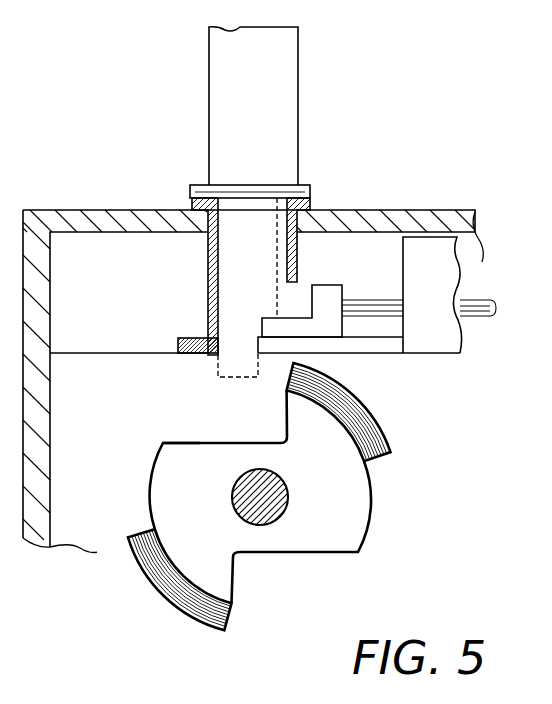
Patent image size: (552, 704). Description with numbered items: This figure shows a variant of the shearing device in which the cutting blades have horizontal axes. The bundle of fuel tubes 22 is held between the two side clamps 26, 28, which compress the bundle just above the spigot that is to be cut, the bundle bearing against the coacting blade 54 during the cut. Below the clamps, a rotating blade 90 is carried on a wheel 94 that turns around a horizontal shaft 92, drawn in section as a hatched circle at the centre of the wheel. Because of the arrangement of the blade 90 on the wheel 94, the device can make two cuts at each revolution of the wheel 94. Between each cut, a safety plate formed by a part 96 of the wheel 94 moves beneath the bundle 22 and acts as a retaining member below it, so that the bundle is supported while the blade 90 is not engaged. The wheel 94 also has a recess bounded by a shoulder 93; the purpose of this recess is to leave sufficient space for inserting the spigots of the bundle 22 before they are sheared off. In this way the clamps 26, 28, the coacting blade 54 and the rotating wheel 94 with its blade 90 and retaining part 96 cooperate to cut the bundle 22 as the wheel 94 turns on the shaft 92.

The bundle of fuel tubes 22 is at (283, 251).
The side clamp 26 is at (440, 248).
The side clamp 28 is at (333, 294).
The coacting blade 54 is at (192, 337).
The blade 90 is at (357, 413).
The horizontal shaft 92 is at (258, 470).
The shoulder 93 is at (175, 442).
The wheel 94 is at (320, 488).
The part of wheel 96 is at (363, 543).